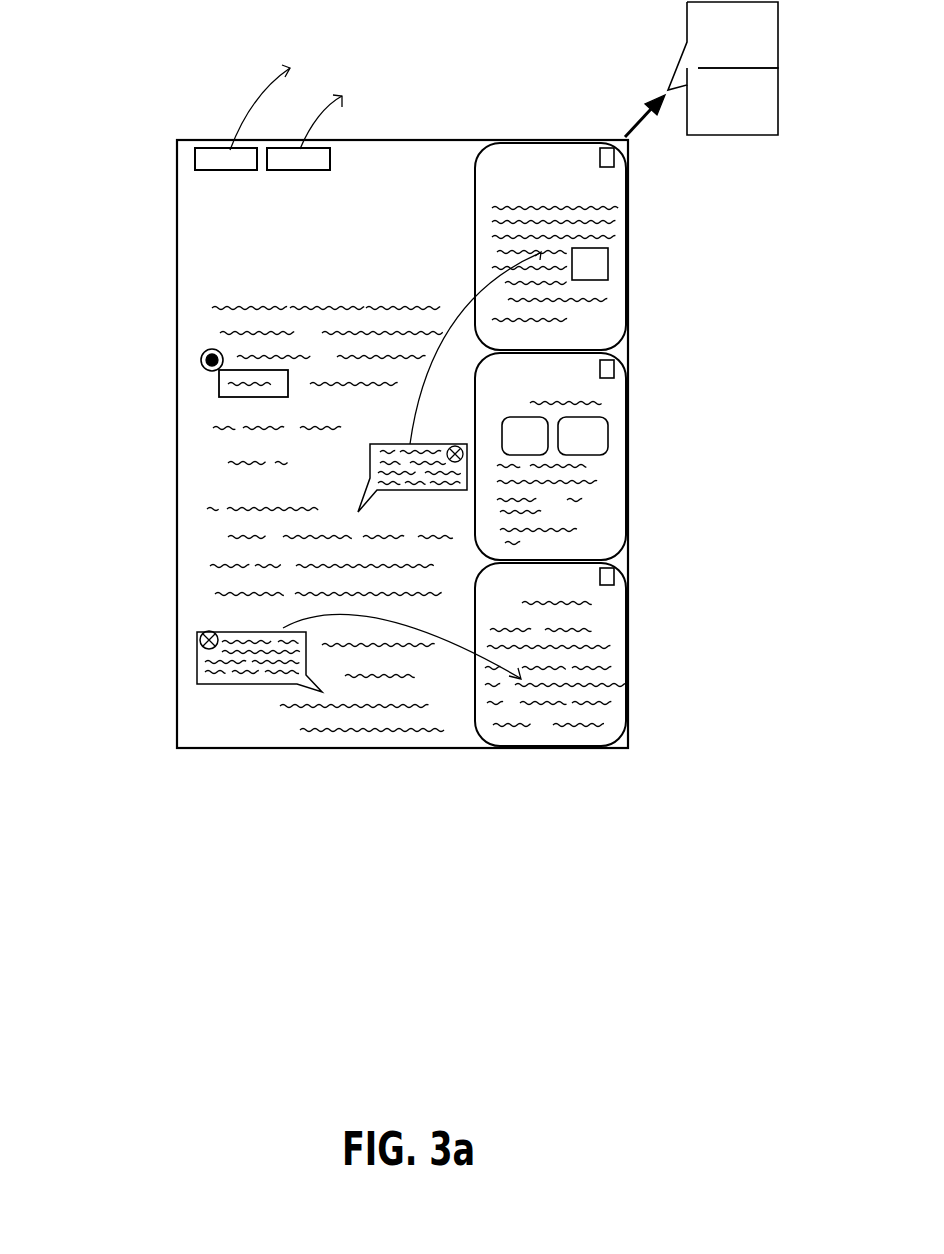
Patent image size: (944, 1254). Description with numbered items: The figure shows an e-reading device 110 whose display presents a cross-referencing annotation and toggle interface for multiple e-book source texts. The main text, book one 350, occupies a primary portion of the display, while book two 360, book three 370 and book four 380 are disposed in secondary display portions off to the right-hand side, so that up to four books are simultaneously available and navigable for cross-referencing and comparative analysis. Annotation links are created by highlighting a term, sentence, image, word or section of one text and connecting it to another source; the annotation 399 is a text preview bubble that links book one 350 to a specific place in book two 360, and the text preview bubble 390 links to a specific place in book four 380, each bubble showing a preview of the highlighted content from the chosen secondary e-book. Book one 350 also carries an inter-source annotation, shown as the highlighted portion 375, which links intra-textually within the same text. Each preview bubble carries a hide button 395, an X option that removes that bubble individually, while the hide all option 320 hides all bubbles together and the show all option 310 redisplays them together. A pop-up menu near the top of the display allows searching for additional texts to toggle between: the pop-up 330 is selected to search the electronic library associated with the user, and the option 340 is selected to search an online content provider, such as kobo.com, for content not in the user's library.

The e-reading device 110 is at (510, 748).
The show all option 310 is at (471, 66).
The hide all option 320 is at (504, 101).
The pop-up for searching electronic library 330 is at (763, 50).
The option to search online content provider 340 is at (763, 98).
The main text (book one) 350 is at (203, 211).
The book two 360 is at (603, 302).
The book three 370 is at (603, 480).
The highlighted portion (inter-source annotation) 375 is at (217, 377).
The book four 380 is at (610, 640).
The text preview bubble 390 is at (218, 685).
The hide button 395 is at (198, 632).
The annotation (text preview bubble) 399 is at (372, 473).